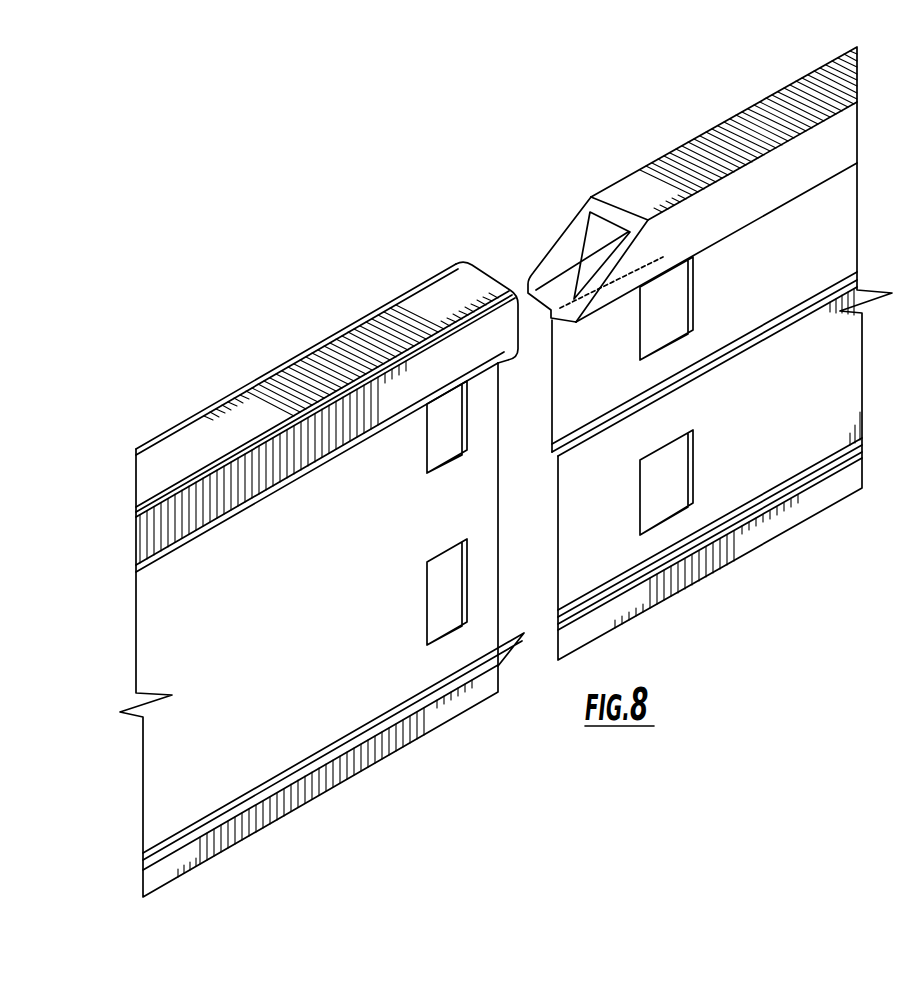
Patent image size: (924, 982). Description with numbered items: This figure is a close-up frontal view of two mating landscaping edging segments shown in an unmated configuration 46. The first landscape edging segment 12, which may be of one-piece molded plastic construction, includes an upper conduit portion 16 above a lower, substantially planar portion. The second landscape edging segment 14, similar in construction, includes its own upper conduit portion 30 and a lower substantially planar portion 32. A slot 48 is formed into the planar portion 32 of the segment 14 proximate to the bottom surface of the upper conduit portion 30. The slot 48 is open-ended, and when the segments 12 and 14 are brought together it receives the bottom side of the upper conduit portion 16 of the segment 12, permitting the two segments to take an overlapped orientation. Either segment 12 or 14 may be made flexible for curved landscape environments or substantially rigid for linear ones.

The landscape edging segment 12 is at (364, 336).
The landscape edging segment 14 is at (707, 142).
The upper conduit portion 16 is at (499, 348).
The upper conduit portion 30 is at (582, 253).
The lower substantially planar portion 32 is at (823, 215).
The unmated configuration 46 is at (120, 342).
The slot 48 is at (653, 257).